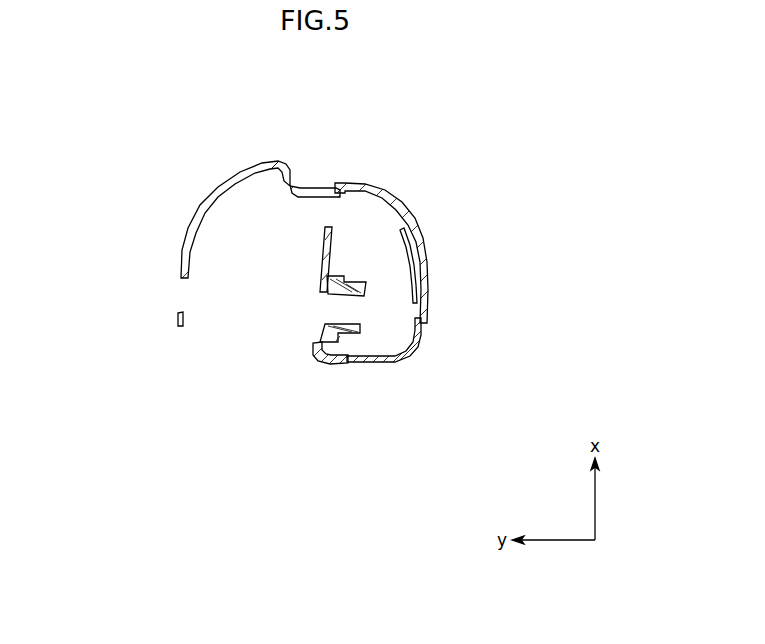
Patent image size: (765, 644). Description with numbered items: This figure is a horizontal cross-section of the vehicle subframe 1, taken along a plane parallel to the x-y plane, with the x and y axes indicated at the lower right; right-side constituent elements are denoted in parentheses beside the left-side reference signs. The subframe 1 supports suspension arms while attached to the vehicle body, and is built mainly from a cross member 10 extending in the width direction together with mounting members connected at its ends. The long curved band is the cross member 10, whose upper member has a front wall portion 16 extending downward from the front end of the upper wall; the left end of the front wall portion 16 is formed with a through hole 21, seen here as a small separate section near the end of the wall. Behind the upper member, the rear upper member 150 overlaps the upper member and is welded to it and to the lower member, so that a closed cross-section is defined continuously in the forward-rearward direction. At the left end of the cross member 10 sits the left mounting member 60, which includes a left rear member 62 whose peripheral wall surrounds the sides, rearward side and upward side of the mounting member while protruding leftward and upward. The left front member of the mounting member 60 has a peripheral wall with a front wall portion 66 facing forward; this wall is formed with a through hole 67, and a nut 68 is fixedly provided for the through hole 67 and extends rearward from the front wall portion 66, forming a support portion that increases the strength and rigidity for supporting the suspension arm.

The subframe 1 is at (432, 148).
The cross member 10 is at (262, 152).
The front wall portion 16 is at (185, 240).
The through hole 21 is at (180, 311).
The rear upper member 150 is at (410, 214).
The left mounting member 60 is at (335, 339).
The left rear member 62 is at (403, 355).
The front wall portion 66 is at (313, 346).
The through hole 67 is at (323, 290).
The nut 68 is at (348, 288).